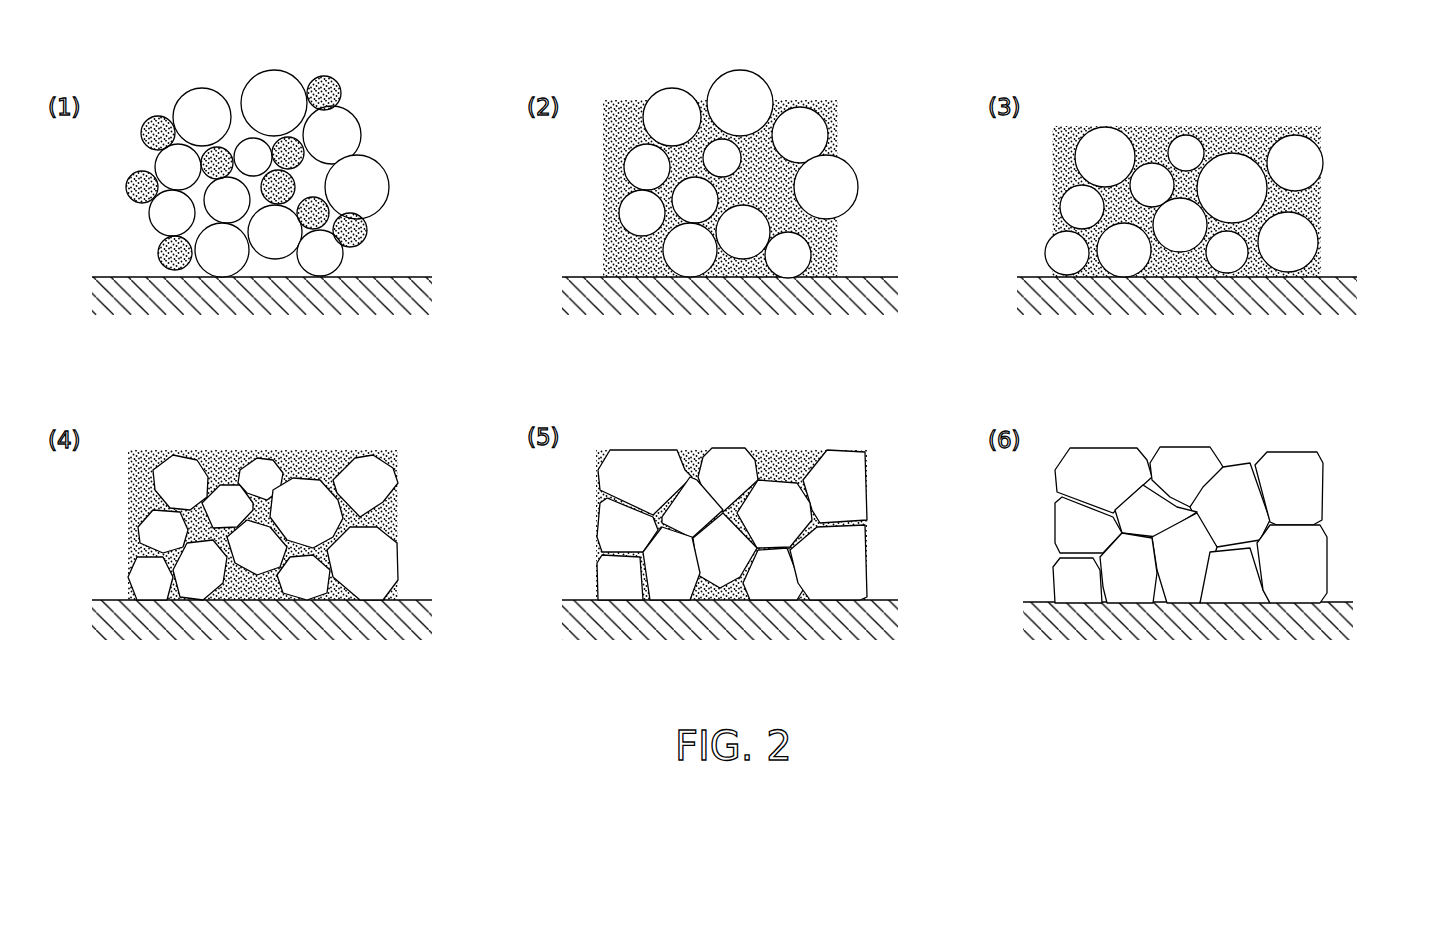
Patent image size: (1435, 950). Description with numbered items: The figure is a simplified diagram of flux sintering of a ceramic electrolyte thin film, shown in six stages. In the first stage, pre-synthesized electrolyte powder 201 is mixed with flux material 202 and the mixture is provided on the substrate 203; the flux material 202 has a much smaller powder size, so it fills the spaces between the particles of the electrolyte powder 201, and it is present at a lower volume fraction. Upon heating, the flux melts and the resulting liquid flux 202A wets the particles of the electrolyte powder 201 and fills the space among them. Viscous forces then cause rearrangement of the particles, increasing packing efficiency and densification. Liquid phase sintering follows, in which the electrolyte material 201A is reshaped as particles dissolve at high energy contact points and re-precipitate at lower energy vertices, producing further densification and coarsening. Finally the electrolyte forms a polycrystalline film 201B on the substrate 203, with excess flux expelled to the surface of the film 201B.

The pre-synthesized electrolyte powder 201 is at (270, 90).
The flux material 202 is at (337, 96).
The liquid flux 202A is at (823, 247).
The substrate 203 is at (405, 268).
The electrolyte material 201A is at (378, 450).
The polycrystalline film 201B is at (1312, 470).